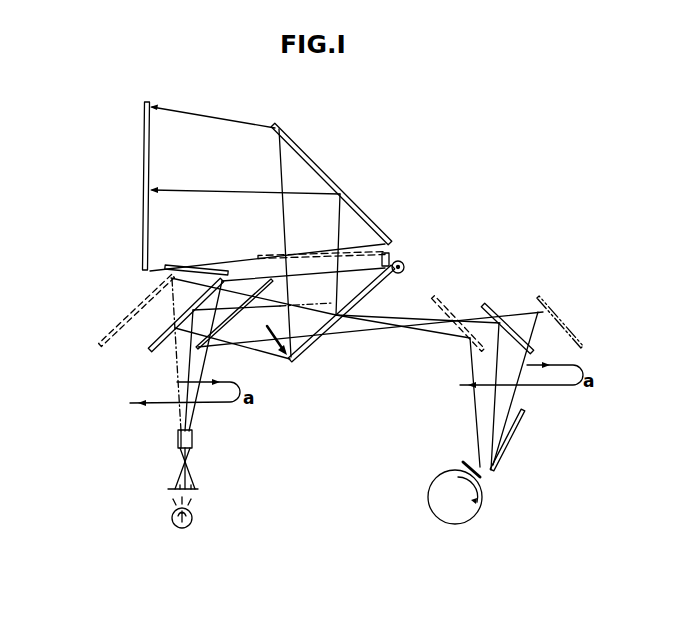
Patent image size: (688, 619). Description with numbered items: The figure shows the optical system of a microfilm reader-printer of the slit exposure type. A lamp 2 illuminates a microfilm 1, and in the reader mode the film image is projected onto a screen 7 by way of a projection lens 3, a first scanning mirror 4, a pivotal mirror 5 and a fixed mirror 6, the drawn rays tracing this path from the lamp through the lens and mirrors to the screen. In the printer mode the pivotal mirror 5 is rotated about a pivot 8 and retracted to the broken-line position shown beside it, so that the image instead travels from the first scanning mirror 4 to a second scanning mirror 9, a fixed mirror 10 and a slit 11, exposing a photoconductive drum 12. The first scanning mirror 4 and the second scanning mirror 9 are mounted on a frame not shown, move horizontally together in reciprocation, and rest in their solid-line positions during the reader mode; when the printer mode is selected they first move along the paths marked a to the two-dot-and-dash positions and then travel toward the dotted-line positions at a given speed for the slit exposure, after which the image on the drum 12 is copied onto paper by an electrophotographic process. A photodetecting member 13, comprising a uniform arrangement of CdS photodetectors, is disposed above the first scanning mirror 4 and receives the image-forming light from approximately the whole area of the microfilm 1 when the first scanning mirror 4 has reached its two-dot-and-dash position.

The microfilm 1 is at (198, 488).
The lamp 2 is at (182, 528).
The projection lens 3 is at (193, 443).
The first scanning mirror 4 is at (153, 341).
The pivotal mirror 5 is at (311, 343).
The fixed mirror 6 is at (321, 168).
The screen 7 is at (144, 150).
The pivot 8 is at (406, 266).
The second scanning mirror 9 is at (487, 302).
The fixed mirror 10 is at (514, 438).
The slit 11 is at (484, 479).
The photoconductive drum 12 is at (467, 522).
The photodetecting member 13 is at (160, 275).